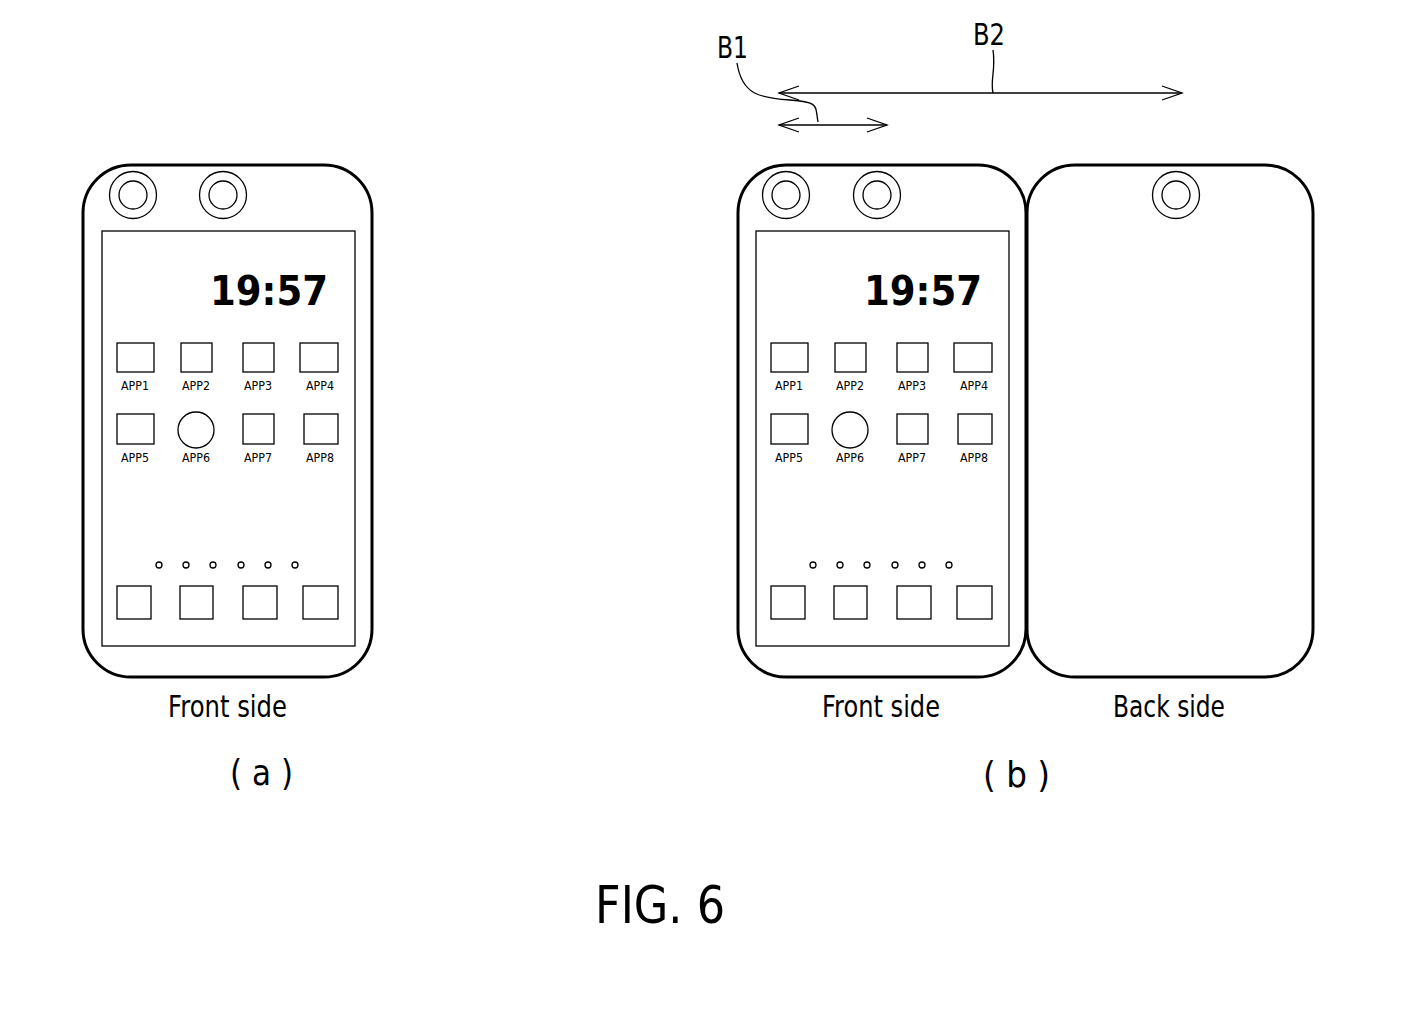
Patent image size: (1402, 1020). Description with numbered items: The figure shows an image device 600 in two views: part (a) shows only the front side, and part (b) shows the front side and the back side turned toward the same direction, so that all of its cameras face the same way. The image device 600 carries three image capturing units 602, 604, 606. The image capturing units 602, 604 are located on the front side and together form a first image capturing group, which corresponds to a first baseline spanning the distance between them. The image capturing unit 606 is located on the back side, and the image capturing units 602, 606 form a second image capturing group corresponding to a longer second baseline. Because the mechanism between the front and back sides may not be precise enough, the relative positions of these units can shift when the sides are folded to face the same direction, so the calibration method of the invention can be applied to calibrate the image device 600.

The image device 600 is at (310, 108).
The image capturing unit 602 is at (122, 177).
The image capturing unit 604 is at (213, 177).
The image capturing unit 606 is at (1163, 177).